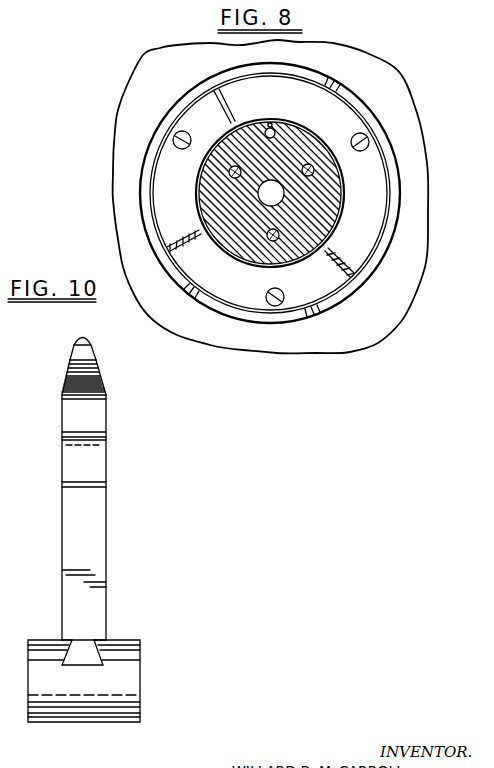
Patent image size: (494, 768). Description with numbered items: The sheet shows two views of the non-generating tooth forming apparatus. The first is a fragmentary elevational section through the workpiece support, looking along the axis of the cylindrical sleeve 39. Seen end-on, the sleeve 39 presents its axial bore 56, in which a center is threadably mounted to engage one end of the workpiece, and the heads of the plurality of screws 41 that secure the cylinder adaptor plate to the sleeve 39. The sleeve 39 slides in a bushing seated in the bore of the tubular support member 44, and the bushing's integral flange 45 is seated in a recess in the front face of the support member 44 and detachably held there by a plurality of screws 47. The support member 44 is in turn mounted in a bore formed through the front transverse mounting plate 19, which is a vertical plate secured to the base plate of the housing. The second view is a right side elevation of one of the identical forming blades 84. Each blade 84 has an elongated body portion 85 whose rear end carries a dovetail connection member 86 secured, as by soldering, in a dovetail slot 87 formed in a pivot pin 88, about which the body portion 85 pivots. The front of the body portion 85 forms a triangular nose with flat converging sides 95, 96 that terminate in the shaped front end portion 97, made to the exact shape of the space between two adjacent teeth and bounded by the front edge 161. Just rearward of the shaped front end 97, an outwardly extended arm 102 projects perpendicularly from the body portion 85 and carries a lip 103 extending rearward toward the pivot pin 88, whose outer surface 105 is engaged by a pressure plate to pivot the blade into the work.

In FIG. 8, the front transverse mounting plate 19 is at (382, 315).
In FIG. 8, the cylindrical sleeve 39 is at (326, 212).
In FIG. 8, the screws 41 is at (229, 173).
In FIG. 8, the tubular support member 44 is at (372, 268).
In FIG. 8, the flange 45 is at (372, 233).
In FIG. 8, the screws 47 is at (173, 143).
In FIG. 8, the axial bore 56 is at (276, 184).
In FIG. 10, the forming blade 84 is at (116, 551).
In FIG. 10, the body portion 85 is at (92, 600).
In FIG. 10, the dovetail connection member 86 is at (80, 652).
In FIG. 10, the dovetail slot 87 is at (80, 648).
In FIG. 10, the pivot pin 88 is at (125, 676).
In FIG. 10, the converging side 95 is at (68, 372).
In FIG. 10, the converging side 96 is at (100, 376).
In FIG. 10, the shaped front end portion 97 is at (135, 343).
In FIG. 10, the outwardly extended arm 102 is at (90, 420).
In FIG. 10, the lip 103 is at (106, 462).
In FIG. 10, the outer surface 105 is at (92, 472).
In FIG. 10, the front edge 161 is at (84, 341).